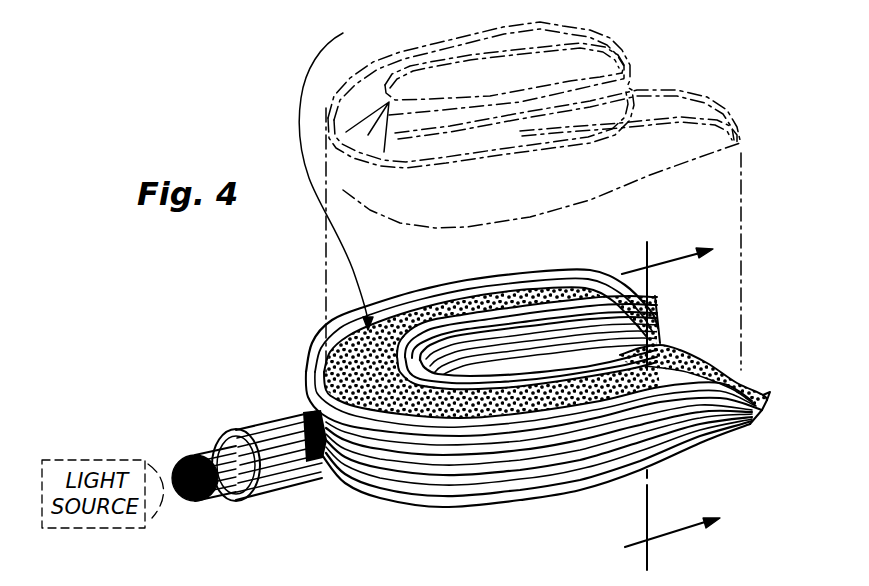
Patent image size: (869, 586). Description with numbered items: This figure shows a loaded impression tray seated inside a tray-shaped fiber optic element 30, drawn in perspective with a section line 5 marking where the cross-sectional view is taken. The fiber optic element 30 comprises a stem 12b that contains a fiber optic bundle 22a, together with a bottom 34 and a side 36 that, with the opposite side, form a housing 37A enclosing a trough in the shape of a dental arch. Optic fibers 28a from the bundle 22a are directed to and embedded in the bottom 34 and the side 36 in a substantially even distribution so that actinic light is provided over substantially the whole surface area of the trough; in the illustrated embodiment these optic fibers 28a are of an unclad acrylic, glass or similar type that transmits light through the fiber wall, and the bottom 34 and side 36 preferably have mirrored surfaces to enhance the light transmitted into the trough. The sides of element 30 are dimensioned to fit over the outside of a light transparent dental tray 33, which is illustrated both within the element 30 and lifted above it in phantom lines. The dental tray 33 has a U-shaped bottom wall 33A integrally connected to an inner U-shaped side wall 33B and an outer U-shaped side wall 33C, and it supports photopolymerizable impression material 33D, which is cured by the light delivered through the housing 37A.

The light transparent dental tray 33 is at (412, 38).
The U-shaped bottom wall 33A is at (383, 102).
The inner U-shaped side wall 33B is at (497, 313).
The outer U-shaped side wall 33C is at (470, 290).
The photopolymerizable impression material 33D is at (680, 352).
The housing 37A is at (320, 362).
The tray-shaped fiber optic element 30 is at (518, 533).
The side 36 is at (448, 468).
The bottom 34 is at (545, 494).
The optic fibers 28a is at (710, 421).
The stem 12b is at (278, 423).
The fiber optic bundle 22a is at (214, 493).
The section line 5- 5 is at (671, 406).